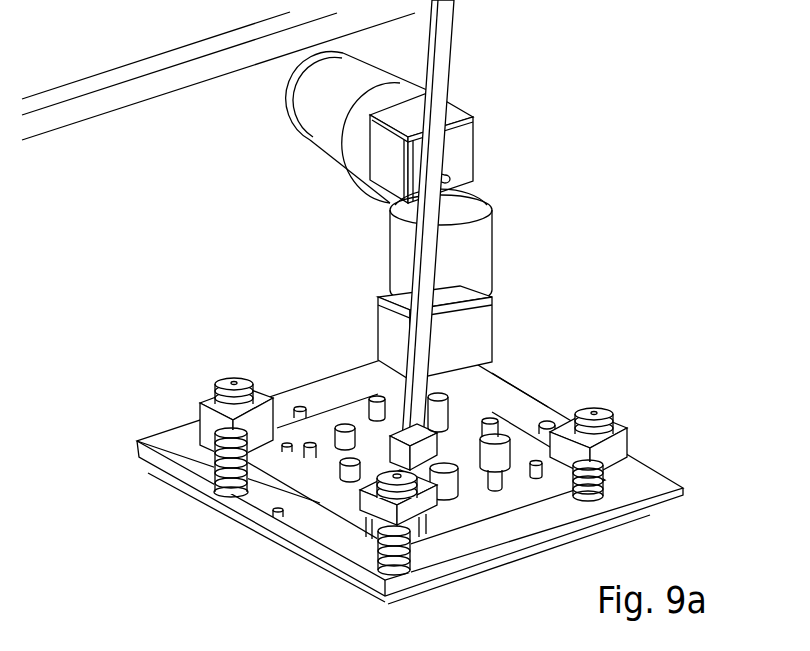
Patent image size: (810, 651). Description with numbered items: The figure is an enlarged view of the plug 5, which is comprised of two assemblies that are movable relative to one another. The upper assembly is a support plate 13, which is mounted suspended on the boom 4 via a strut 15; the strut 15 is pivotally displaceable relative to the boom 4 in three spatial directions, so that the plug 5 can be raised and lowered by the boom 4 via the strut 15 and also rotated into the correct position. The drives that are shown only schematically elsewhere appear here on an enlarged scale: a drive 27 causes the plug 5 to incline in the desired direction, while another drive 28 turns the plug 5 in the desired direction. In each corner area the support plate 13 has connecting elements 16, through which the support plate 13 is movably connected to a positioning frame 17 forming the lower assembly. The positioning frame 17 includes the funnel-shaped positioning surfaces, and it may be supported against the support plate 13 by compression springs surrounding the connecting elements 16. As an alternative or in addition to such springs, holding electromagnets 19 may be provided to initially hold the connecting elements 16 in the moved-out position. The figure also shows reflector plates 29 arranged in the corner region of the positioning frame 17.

The boom 4 is at (83, 108).
The plug 5 is at (513, 380).
The support plate 13 is at (473, 530).
The strut 15 is at (405, 375).
The connecting elements 16 is at (620, 428).
The positioning frame 17 is at (665, 473).
The holding electromagnets 19 is at (620, 413).
The drive 27 is at (320, 133).
The drive 28 is at (470, 252).
The reflector plates 29 is at (178, 483).